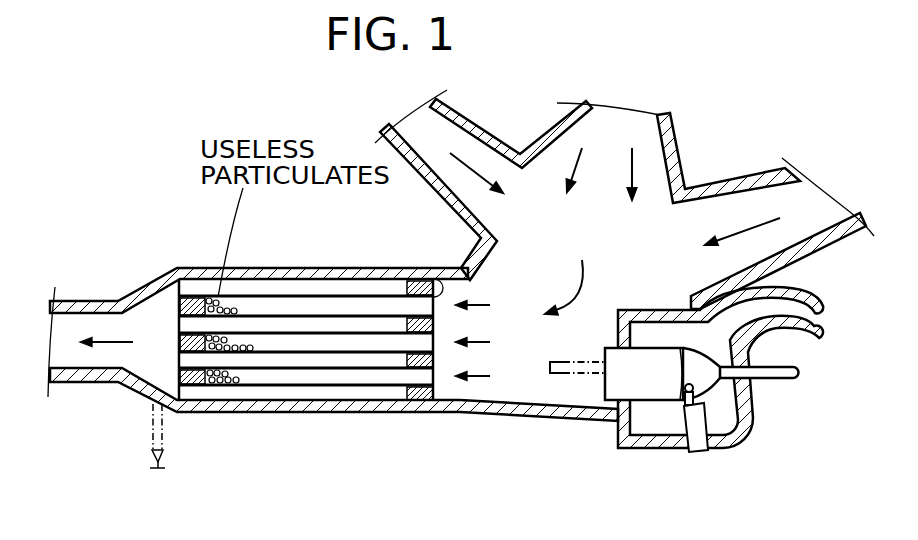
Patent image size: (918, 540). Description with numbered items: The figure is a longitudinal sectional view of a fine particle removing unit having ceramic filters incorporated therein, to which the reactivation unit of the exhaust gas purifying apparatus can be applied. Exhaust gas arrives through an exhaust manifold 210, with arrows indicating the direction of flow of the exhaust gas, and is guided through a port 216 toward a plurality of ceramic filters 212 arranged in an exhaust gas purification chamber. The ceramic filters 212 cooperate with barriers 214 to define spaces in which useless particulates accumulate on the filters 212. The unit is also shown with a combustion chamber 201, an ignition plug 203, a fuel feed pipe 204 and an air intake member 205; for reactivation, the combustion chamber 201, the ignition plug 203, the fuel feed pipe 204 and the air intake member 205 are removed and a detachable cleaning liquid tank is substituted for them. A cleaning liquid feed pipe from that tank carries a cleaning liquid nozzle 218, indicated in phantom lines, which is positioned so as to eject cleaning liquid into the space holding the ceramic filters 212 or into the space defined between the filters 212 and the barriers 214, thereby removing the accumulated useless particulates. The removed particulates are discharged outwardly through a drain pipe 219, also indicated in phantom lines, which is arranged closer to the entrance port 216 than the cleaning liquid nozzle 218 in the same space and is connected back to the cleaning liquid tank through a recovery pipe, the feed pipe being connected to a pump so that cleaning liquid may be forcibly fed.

The combustion chamber 201 is at (659, 388).
The ignition plug 203 is at (707, 446).
The fuel feed pipe 204 is at (797, 380).
The air intake member 205 is at (822, 310).
The exhaust manifold 210 is at (558, 152).
The ceramic filters 212 is at (286, 335).
The barriers 214 is at (191, 297).
The port 216 is at (433, 268).
The cleaning liquid nozzle 218 is at (556, 378).
The drain pipe 219 is at (152, 423).